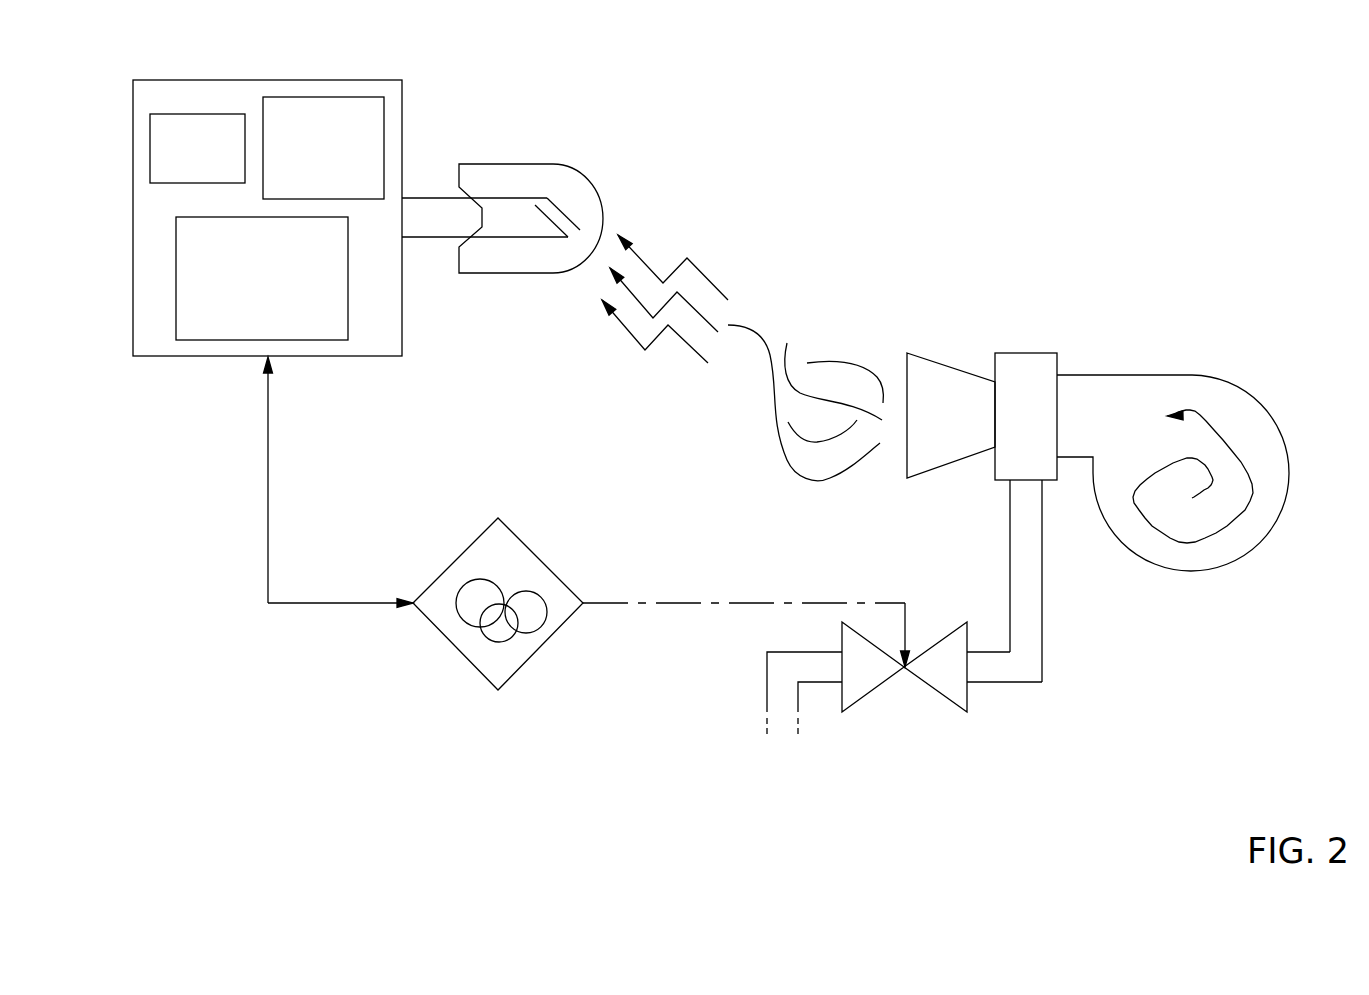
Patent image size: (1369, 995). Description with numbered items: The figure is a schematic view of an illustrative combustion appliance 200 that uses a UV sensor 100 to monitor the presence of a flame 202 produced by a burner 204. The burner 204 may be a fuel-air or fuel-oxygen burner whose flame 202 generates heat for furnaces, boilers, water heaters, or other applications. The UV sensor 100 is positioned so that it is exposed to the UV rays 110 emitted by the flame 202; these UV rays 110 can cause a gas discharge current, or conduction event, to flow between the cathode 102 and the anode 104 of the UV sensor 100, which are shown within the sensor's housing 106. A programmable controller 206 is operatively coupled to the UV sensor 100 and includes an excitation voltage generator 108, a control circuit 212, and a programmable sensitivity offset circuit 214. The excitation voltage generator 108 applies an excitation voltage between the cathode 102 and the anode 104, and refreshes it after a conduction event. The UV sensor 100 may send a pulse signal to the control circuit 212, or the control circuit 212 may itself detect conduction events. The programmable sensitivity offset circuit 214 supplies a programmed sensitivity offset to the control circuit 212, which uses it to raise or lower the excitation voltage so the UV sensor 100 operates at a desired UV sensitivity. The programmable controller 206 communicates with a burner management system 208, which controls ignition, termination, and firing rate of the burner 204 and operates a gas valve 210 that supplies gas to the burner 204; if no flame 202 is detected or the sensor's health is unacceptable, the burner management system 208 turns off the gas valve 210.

The UV sensor 100 is at (537, 205).
The cathode 102 is at (567, 217).
The anode 104 is at (552, 223).
The sensor housing 106 is at (503, 164).
The excitation voltage generator 108 is at (353, 97).
The UV rays 110 is at (708, 277).
The combustion appliance 200 is at (957, 232).
The flame 202 is at (823, 350).
The burner 204 is at (1065, 335).
The programmable controller 206 is at (267, 80).
The burner management system 208 is at (542, 560).
The gas valve 210 is at (938, 692).
The control circuit 212 is at (150, 147).
The programmable sensitivity offset circuit 214 is at (176, 275).